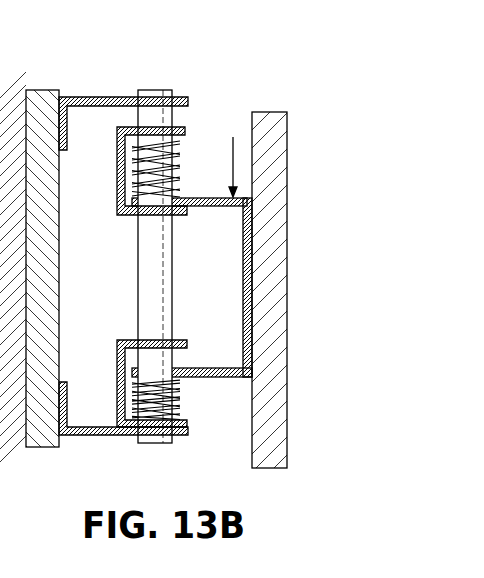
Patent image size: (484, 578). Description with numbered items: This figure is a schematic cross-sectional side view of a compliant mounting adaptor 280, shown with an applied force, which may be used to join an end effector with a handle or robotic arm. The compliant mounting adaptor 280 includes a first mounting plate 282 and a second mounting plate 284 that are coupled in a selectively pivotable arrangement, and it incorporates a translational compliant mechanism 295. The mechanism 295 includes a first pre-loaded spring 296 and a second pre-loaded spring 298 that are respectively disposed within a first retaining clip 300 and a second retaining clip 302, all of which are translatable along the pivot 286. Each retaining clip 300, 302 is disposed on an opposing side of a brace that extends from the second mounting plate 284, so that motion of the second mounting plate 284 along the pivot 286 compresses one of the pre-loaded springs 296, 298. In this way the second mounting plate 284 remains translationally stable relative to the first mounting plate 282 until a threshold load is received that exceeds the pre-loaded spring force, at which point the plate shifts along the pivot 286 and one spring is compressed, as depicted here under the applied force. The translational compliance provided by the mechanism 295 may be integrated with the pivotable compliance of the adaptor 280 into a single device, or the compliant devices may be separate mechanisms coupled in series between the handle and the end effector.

The compliant mounting adaptor 280 is at (303, 72).
The first mounting plate 282 is at (44, 90).
The second mounting plate 284 is at (263, 110).
The pivot 286 is at (138, 257).
The translational compliant mechanism 295 is at (227, 108).
The first pre-loaded spring 296 is at (177, 180).
The second pre-loaded spring 298 is at (178, 390).
The first retaining clip 300 is at (117, 147).
The second retaining clip 302 is at (117, 380).